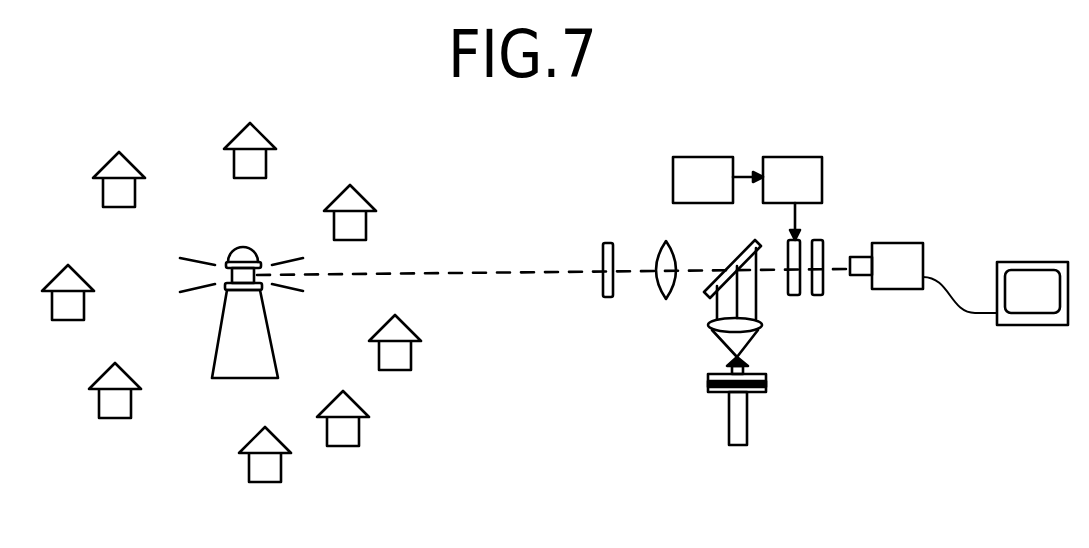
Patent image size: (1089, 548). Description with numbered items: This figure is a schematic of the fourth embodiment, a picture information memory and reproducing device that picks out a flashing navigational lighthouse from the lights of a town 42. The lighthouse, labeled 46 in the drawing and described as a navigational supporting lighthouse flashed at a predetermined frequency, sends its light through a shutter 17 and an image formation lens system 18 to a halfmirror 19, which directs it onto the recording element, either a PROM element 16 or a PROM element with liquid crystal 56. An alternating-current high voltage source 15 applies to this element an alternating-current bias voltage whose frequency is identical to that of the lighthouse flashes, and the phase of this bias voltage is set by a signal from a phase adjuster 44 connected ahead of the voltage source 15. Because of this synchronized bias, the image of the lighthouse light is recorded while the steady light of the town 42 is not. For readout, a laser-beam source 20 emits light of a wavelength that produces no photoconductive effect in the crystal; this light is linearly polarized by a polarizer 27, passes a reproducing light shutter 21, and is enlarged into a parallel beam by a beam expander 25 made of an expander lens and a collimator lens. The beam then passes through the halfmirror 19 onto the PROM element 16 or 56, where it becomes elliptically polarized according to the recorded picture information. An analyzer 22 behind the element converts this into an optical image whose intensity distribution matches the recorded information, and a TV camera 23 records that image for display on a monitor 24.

The alternating-current high voltage source 15 is at (793, 165).
The PROM element 16 is at (793, 298).
The PROM element with liquid crystal 56 is at (803, 301).
The shutter 17 is at (606, 244).
The image formation lens system 18 is at (663, 255).
The halfmirror 19 is at (738, 252).
The laser-beam source 20 is at (728, 425).
The reproducing light shutter 21 is at (708, 379).
The analyzer 22 is at (818, 297).
The TV camera 23 is at (895, 284).
The monitor 24 is at (1022, 318).
The beam expander 25 is at (700, 323).
The polarizer 27 is at (712, 391).
The town 42 is at (283, 470).
The phase adjuster 44 is at (705, 168).
The lighthouse (light source) 46 is at (228, 370).